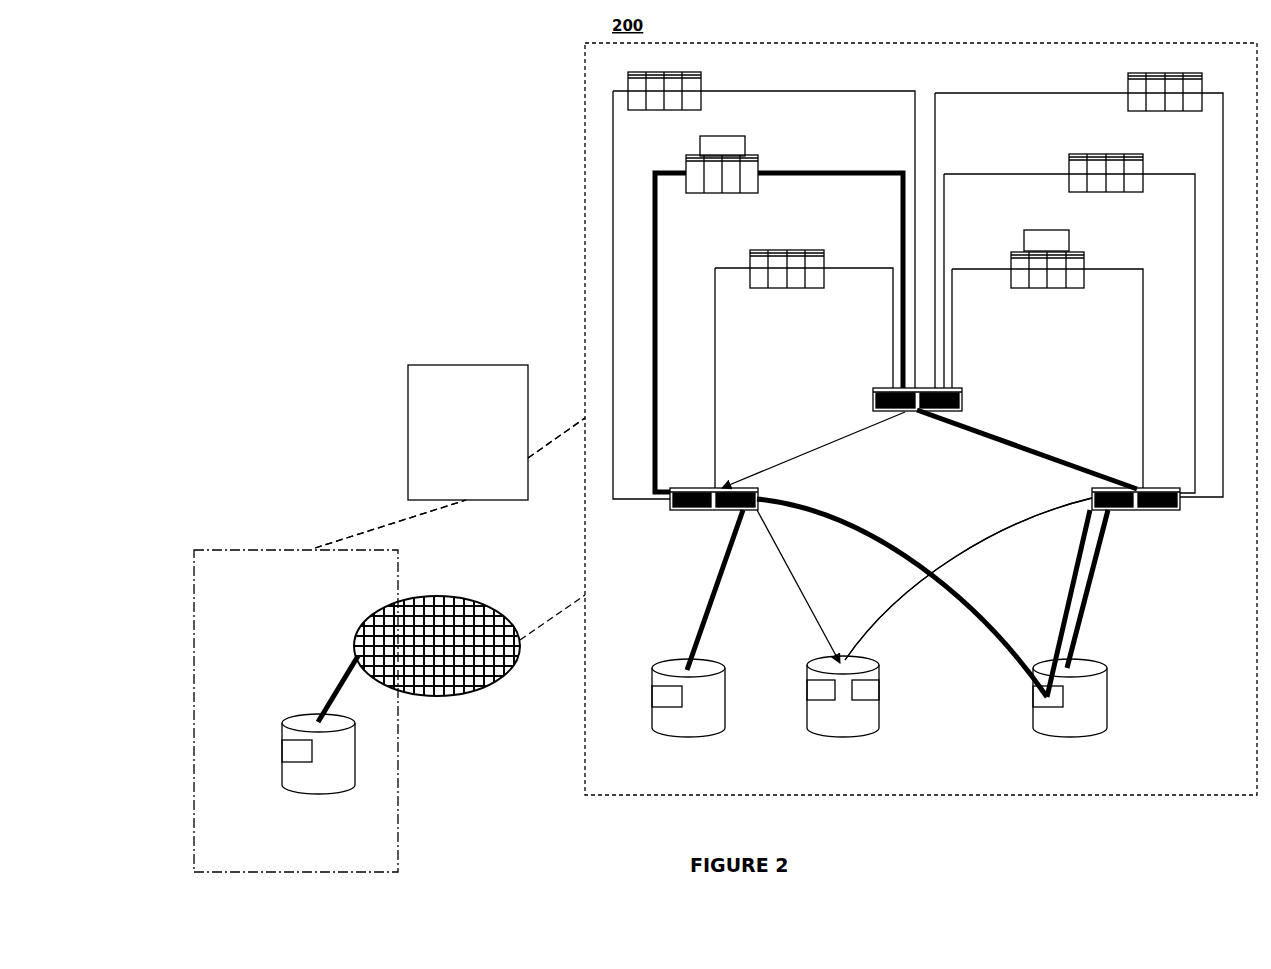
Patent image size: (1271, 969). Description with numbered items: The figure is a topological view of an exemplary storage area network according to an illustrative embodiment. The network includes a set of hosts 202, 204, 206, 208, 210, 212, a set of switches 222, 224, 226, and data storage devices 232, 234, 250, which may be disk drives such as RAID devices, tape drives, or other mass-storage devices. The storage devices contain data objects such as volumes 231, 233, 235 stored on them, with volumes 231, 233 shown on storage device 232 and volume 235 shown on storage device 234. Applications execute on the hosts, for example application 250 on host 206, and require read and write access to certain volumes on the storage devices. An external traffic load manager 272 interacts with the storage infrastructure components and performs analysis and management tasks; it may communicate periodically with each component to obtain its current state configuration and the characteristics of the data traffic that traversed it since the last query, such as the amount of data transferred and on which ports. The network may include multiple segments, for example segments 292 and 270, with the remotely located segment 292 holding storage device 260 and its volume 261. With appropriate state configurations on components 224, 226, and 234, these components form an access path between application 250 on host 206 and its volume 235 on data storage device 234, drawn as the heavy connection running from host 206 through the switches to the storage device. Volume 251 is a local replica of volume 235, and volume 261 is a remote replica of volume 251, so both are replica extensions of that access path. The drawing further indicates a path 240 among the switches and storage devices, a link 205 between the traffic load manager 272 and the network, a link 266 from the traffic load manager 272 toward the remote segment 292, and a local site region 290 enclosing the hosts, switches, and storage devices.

The host 202 is at (701, 83).
The host 204 is at (1023, 290).
The connection between traffic load manager and system 205 is at (558, 437).
The host 206 is at (758, 185).
The host 208 is at (818, 290).
The host 210 is at (1123, 108).
The host 212 is at (1068, 185).
The switch 222 is at (688, 512).
The switch 224 is at (875, 392).
The switch 226 is at (1172, 515).
The volume 231 is at (820, 689).
The data storage device 232 is at (807, 715).
The volume 233 is at (872, 692).
The data storage device 234 is at (1108, 715).
The volume 235 is at (1032, 698).
The path 240 is at (1073, 557).
The application 250 is at (745, 140).
The volume 251 is at (651, 700).
The application / storage 260 is at (290, 783).
The volume 261 is at (283, 753).
The connection to remote site 266 is at (372, 528).
The segment 270 is at (458, 597).
The traffic load manager 272 is at (407, 460).
The local site 290 is at (583, 735).
The segment 292 is at (398, 860).